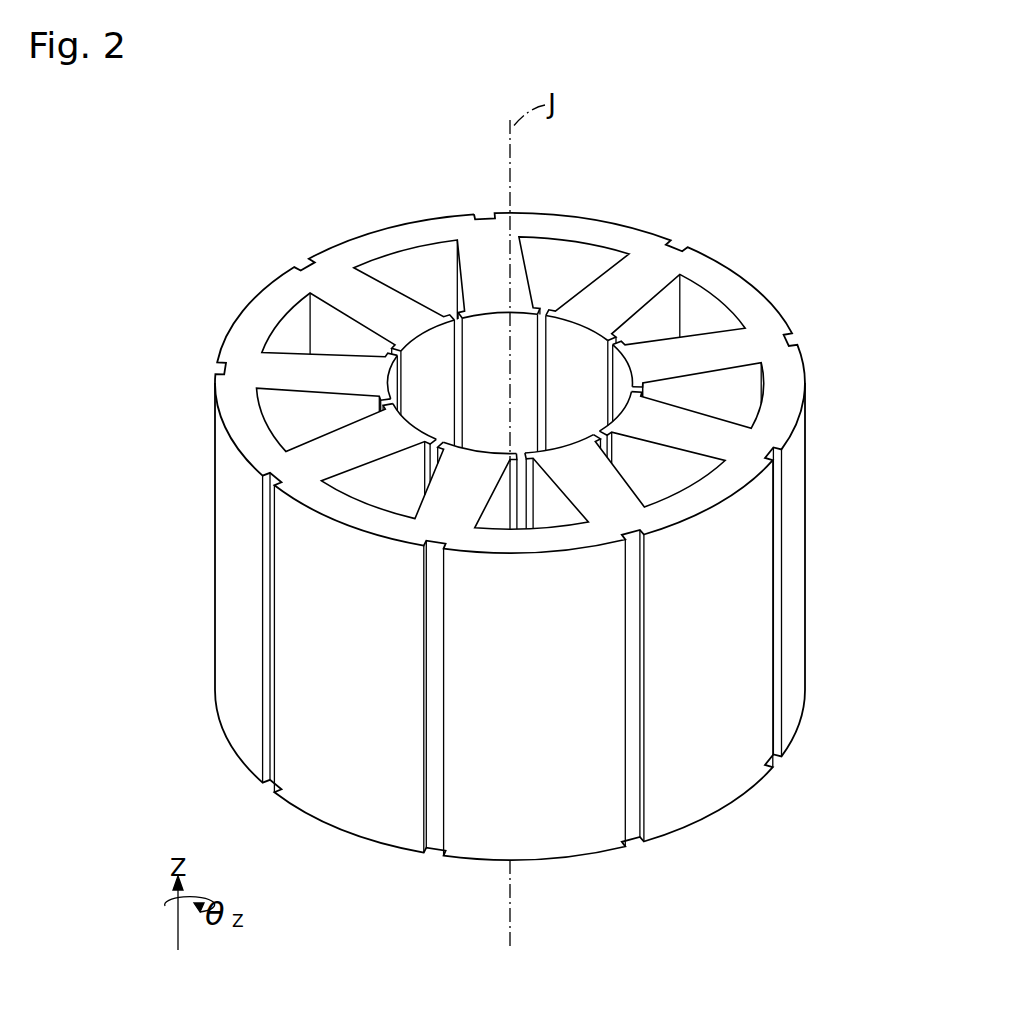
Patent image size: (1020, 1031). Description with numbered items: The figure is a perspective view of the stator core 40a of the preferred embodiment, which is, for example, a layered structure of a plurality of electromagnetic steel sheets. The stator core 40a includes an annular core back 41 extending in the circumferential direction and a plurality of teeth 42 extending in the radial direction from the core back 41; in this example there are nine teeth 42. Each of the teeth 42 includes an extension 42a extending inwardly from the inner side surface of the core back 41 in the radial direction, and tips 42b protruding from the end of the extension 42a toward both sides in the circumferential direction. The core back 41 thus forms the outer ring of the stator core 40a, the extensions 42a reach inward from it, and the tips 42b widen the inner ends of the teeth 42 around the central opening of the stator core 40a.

The stator core 40a is at (660, 168).
The core back 41 is at (601, 230).
The teeth 42 is at (485, 270).
The extensions 42a is at (779, 454).
The tips 42b is at (515, 306).